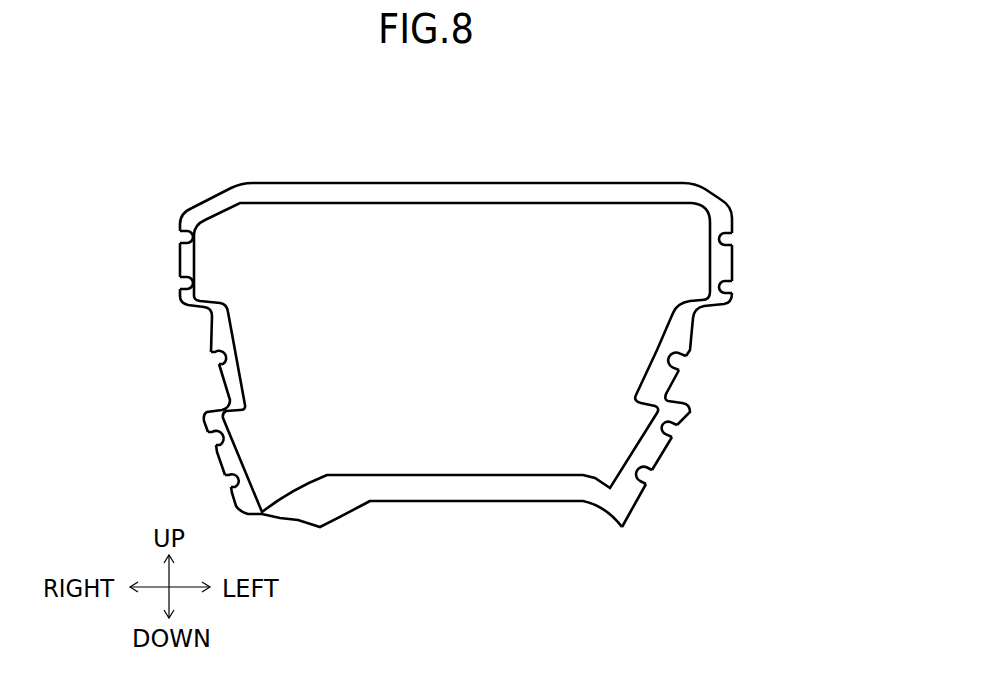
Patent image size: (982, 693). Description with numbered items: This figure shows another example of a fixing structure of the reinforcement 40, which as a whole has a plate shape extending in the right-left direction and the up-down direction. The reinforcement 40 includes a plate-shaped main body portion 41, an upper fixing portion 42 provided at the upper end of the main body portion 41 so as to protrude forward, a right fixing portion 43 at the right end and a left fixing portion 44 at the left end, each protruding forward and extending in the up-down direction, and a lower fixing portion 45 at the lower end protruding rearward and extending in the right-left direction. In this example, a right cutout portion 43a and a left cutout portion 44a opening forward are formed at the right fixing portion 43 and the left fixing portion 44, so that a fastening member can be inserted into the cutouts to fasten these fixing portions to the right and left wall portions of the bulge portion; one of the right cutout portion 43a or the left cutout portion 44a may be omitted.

The reinforcement 40 is at (456, 341).
The main body portion 41 is at (453, 237).
The upper fixing portion 42 is at (336, 182).
The right fixing portion 43 is at (210, 335).
The right cutout portion 43a is at (183, 288).
The left fixing portion 44 is at (695, 339).
The left cutout portion 44a is at (732, 288).
The lower fixing portion 45 is at (457, 502).